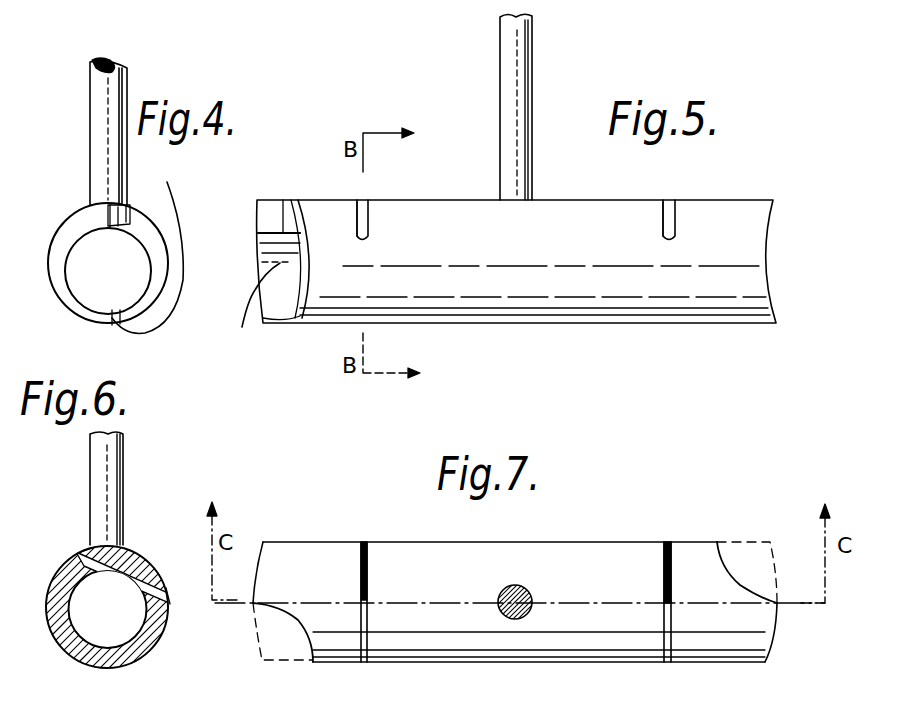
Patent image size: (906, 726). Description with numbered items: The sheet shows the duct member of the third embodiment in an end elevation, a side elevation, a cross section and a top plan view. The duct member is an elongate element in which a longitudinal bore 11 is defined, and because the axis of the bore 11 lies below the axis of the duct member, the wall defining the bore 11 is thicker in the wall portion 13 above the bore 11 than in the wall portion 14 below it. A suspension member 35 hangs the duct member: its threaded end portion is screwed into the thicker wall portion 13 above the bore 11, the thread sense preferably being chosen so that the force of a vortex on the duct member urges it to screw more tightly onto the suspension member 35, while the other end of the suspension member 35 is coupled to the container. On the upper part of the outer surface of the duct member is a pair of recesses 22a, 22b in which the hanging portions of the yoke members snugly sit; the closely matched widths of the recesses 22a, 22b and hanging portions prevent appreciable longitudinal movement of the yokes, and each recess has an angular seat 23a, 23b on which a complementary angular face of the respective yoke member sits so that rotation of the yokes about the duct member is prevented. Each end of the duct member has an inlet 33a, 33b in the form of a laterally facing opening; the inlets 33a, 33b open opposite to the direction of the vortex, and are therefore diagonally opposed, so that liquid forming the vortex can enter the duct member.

In FIG. 6, the longitudinal bore 11 is at (121, 630).
In FIG. 4, the wall portion above the bore 13 is at (108, 205).
In FIG. 6, the wall portion above the bore 13 is at (124, 545).
In FIG. 4, the wall portion below the bore 14 is at (115, 242).
In FIG. 6, the wall portion below the bore 14 is at (112, 667).
In FIG. 5, the recess 22a is at (366, 205).
In FIG. 6, the recess 22a is at (84, 553).
In FIG. 7, the recess 22a is at (362, 560).
In FIG. 5, the recess 22b is at (670, 205).
In FIG. 7, the recess 22b is at (665, 556).
In FIG. 5, the angular seat 23a is at (359, 204).
In FIG. 6, the angular seat 23a is at (155, 549).
In FIG. 5, the angular seat 23b is at (668, 204).
In FIG. 5, the inlet 33a is at (270, 312).
In FIG. 7, the inlet 33a is at (288, 612).
In FIG. 7, the inlet 33b is at (745, 585).
In FIG. 4, the suspension member 35 is at (125, 86).
In FIG. 5, the suspension member 35 is at (516, 107).
In FIG. 6, the suspension member 35 is at (120, 455).